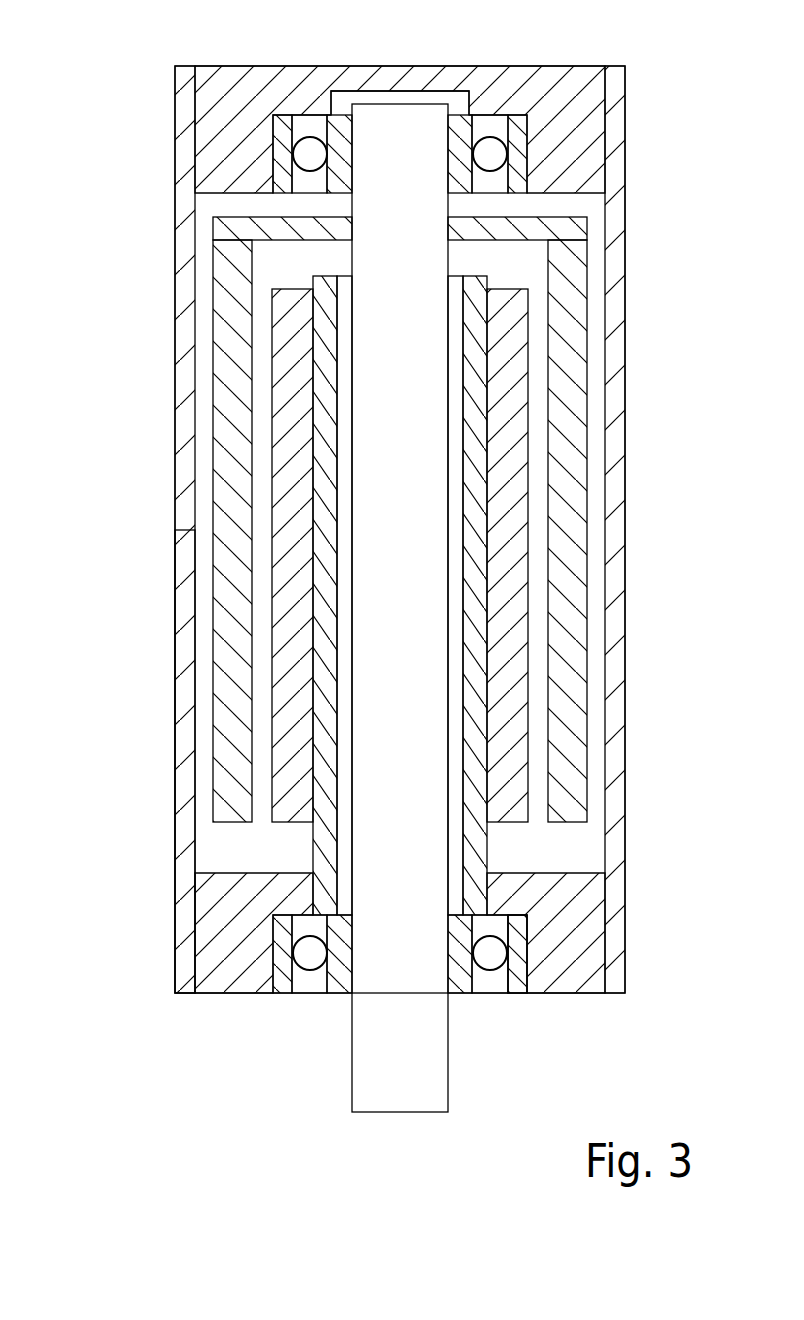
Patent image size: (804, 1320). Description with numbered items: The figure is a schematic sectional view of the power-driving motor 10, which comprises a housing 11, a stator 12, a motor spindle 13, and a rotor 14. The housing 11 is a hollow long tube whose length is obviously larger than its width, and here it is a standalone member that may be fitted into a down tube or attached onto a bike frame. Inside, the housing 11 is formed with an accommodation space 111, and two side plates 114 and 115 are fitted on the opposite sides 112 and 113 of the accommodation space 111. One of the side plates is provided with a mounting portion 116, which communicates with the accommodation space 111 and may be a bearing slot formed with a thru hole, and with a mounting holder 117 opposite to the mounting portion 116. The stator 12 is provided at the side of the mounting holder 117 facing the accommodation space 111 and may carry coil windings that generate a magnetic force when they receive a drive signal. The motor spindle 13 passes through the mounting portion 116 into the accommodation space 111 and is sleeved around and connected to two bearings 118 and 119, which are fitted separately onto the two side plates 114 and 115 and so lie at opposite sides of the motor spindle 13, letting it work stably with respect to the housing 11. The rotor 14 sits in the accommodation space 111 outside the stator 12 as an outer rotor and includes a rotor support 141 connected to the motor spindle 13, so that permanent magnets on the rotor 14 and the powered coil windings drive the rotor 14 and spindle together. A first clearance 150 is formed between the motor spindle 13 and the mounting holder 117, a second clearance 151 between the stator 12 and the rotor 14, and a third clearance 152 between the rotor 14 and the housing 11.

The power-driving motor 10 is at (747, 37).
The housing 11 is at (625, 137).
The accommodation space 111 is at (209, 204).
The side 112 is at (183, 125).
The side 113 is at (177, 947).
The side plate 114 is at (233, 95).
The side plate 115 is at (238, 998).
The mounting portion 116 is at (530, 953).
The mounting holder 117 is at (318, 723).
The bearing 118 is at (516, 128).
The bearing 119 is at (512, 998).
The stator 12 is at (510, 397).
The motor spindle 13 is at (390, 383).
The rotor 14 is at (573, 305).
The rotor support 141 is at (575, 229).
The first clearance 150 is at (417, 597).
The second clearance 151 is at (497, 698).
The third clearance 152 is at (235, 524).